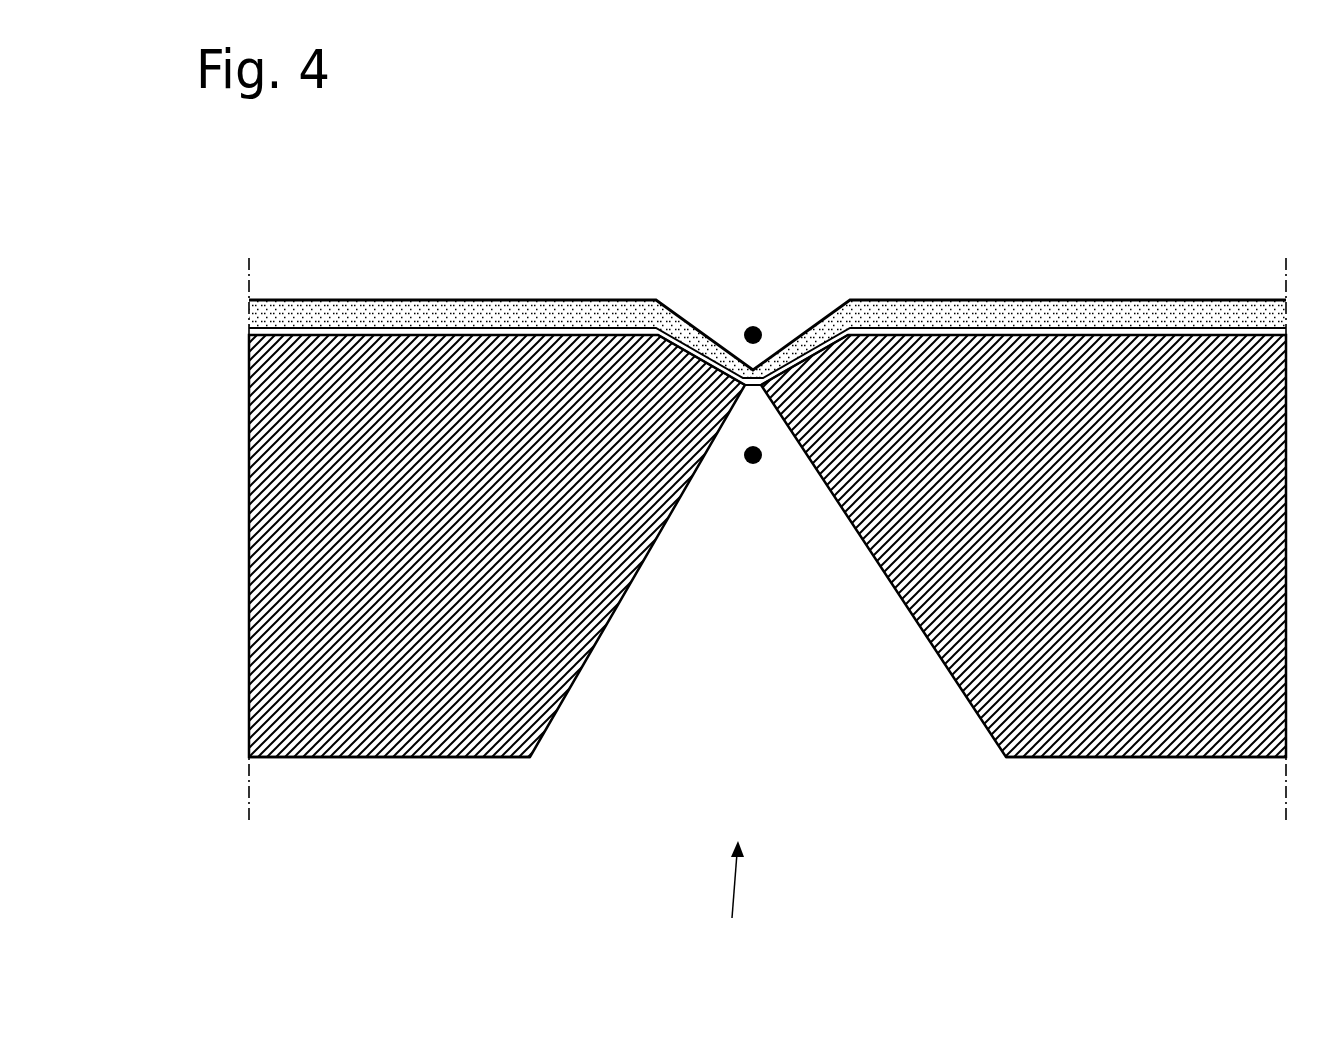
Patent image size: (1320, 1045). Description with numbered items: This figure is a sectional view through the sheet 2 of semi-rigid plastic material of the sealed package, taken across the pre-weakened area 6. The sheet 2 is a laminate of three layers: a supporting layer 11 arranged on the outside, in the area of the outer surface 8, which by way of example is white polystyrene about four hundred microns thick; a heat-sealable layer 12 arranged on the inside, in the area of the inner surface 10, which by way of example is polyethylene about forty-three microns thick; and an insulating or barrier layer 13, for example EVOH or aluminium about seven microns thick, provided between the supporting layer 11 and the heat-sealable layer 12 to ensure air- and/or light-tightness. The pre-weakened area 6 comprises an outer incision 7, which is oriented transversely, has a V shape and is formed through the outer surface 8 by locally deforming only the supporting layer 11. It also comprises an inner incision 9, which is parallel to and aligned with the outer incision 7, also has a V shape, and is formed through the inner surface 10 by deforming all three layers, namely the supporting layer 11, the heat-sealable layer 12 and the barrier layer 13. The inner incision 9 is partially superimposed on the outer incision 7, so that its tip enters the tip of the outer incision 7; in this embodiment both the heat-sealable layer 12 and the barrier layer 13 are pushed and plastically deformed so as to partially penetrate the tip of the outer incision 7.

The sheet of semi-rigid plastic material 2 is at (767, 533).
The pre-weakened area 6 is at (734, 893).
The outer incision 7 is at (750, 455).
The outer surface 8 is at (1105, 762).
The inner incision 9 is at (746, 317).
The inner surface 10 is at (324, 278).
The supporting layer 11 is at (1205, 705).
The heat-sealable layer 12 is at (402, 307).
The barrier layer 13 is at (1082, 322).